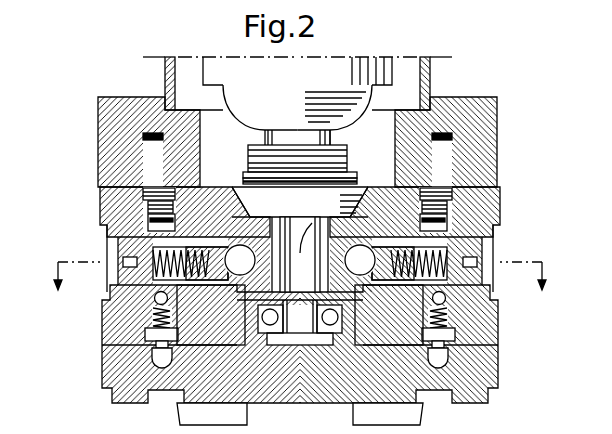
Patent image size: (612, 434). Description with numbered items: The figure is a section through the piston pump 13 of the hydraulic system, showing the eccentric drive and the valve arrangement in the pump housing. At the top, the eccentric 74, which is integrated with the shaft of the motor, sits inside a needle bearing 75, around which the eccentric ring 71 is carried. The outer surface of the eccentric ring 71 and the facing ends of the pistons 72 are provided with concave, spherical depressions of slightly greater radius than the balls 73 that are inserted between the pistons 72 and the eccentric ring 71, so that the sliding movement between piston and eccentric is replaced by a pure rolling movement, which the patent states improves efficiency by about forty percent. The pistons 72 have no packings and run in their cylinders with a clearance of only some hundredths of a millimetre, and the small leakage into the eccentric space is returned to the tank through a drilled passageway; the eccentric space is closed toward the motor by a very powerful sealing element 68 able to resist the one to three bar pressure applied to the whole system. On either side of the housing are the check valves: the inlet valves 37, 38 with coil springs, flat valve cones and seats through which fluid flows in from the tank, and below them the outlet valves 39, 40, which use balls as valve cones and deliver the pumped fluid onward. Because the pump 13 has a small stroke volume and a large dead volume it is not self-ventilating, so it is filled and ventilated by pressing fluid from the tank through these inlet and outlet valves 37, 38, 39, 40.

The pump 13 is at (98, 356).
The inlet valve 37 is at (147, 208).
The inlet valve 38 is at (447, 206).
The outlet valve 39 is at (156, 300).
The outlet valve 40 is at (497, 322).
The sealing element 68 is at (243, 177).
The eccentric ring 71 is at (362, 186).
The piston 72 is at (232, 297).
The ball 73 is at (238, 277).
The eccentric 74 is at (345, 157).
The needle bearing 75 is at (247, 181).